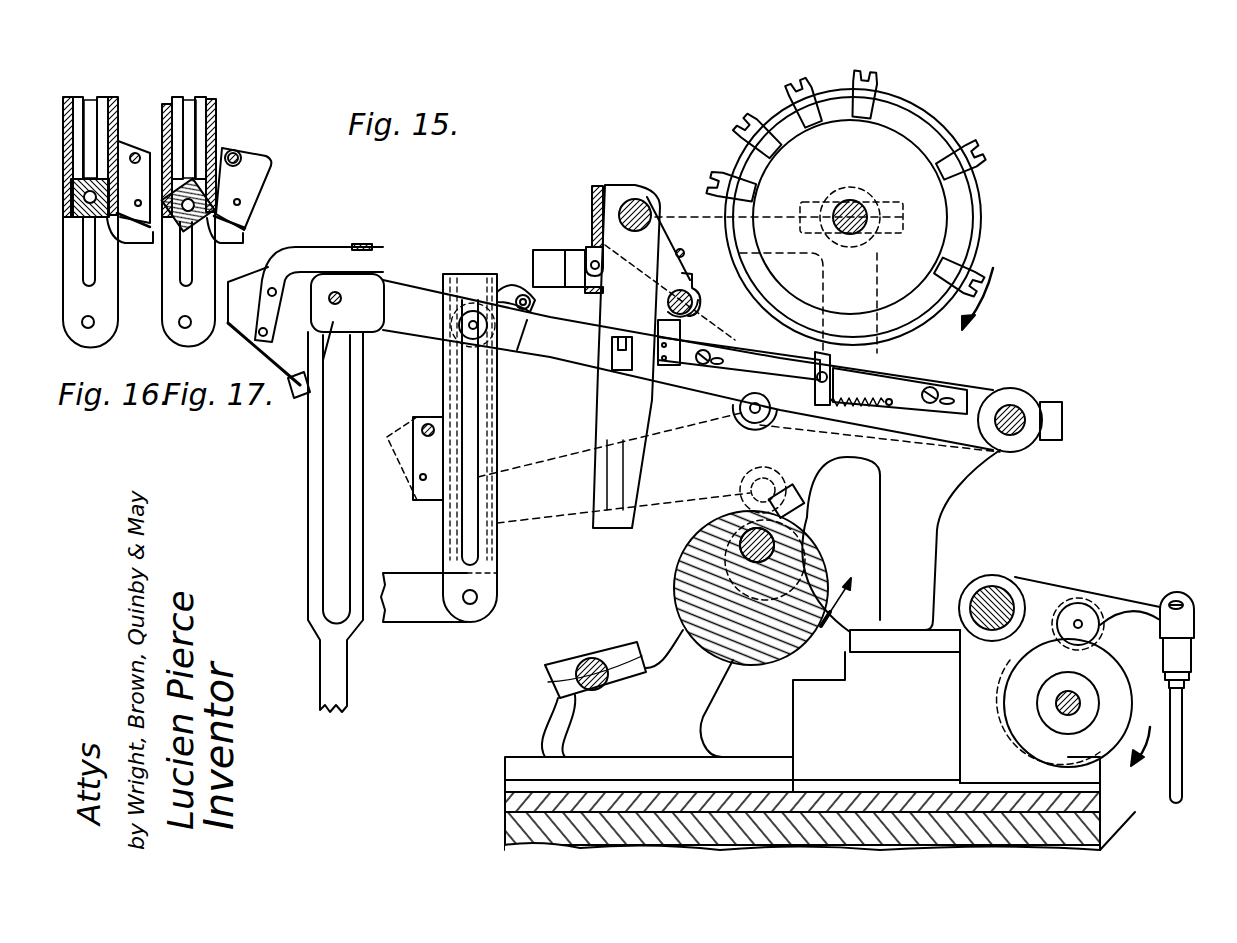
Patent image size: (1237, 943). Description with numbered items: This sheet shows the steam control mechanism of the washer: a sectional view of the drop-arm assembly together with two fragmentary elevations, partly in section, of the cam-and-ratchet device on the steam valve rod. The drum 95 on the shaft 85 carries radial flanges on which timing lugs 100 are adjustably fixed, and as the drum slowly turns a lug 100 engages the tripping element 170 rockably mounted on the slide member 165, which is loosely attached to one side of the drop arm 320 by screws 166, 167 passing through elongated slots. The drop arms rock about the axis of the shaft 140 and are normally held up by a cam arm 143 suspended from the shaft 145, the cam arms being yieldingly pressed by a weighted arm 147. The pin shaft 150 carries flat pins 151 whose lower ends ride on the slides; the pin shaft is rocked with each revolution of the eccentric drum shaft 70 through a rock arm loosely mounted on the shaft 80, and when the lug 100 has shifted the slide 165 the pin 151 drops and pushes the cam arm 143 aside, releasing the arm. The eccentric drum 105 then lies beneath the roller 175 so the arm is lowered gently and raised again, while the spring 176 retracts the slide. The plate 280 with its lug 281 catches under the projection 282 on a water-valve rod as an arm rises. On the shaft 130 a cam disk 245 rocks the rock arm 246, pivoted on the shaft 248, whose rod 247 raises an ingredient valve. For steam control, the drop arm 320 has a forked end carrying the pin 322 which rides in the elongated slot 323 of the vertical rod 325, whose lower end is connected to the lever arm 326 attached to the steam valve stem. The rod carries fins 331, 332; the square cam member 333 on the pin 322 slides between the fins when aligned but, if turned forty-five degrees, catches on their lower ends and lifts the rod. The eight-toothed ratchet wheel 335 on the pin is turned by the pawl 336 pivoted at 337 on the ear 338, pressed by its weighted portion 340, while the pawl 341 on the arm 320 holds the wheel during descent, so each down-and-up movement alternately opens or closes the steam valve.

In FIG. 15, the eccentric drum shaft 70 is at (778, 545).
In FIG. 15, the shaft 80 is at (592, 670).
In FIG. 15, the shaft 85 is at (855, 205).
In FIG. 15, the drum 95 is at (935, 207).
In FIG. 15, the timing lugs 100 is at (742, 135).
In FIG. 15, the eccentric drum 105 is at (690, 566).
In FIG. 15, the shaft 130 is at (1060, 712).
In FIG. 15, the shaft 140 is at (1015, 410).
In FIG. 15, the cam arm 143 is at (600, 240).
In FIG. 15, the shaft 145 is at (640, 198).
In FIG. 15, the weighted arm 147 is at (553, 255).
In FIG. 15, the pin shaft 150 is at (695, 300).
In FIG. 15, the flat pins 151 is at (695, 285).
In FIG. 15, the slide member 165 is at (905, 380).
In FIG. 15, the screw 166 is at (712, 355).
In FIG. 15, the screw 167 is at (950, 390).
In FIG. 15, the tripping element 170 is at (815, 362).
In FIG. 15, the roller 175 is at (738, 410).
In FIG. 15, the spring 176 is at (858, 410).
In FIG. 15, the cam disk 245 is at (1120, 665).
In FIG. 15, the rock arm 246 is at (1080, 600).
In FIG. 15, the rod 247 is at (1172, 760).
In FIG. 15, the shaft 248 is at (990, 600).
In FIG. 15, the plate 280 is at (278, 405).
In FIG. 15, the lug 281 is at (292, 400).
In FIG. 15, the projection 282 is at (307, 560).
In FIG. 15, the drop arm 320 is at (565, 357).
In FIG. 16, the pin 322 is at (92, 240).
In FIG. 17, the pin 322 is at (189, 138).
In FIG. 16, the elongated slot 323 is at (92, 282).
In FIG. 17, the elongated slot 323 is at (185, 280).
In FIG. 15, the elongated slot 323 is at (488, 432).
In FIG. 16, the vertical rod 325 is at (108, 336).
In FIG. 17, the vertical rod 325 is at (168, 332).
In FIG. 15, the vertical rod 325 is at (497, 553).
In FIG. 15, the lever arm 326 is at (425, 612).
In FIG. 16, the fin 331 is at (113, 156).
In FIG. 17, the fin 331 is at (215, 108).
In FIG. 16, the fin 332 is at (163, 120).
In FIG. 17, the fin 332 is at (167, 160).
In FIG. 16, the square cam member 333 is at (120, 243).
In FIG. 17, the square cam member 333 is at (215, 243).
In FIG. 16, the ratchet wheel 335 is at (70, 195).
In FIG. 17, the ratchet wheel 335 is at (188, 205).
In FIG. 15, the ratchet wheel 335 is at (462, 302).
In FIG. 16, the pawl 336 is at (133, 220).
In FIG. 17, the pawl 336 is at (247, 228).
In FIG. 17, the pivot 337 is at (240, 158).
In FIG. 17, the ear 338 is at (228, 150).
In FIG. 16, the weighted portion 340 is at (134, 182).
In FIG. 17, the weighted portion 340 is at (255, 165).
In FIG. 15, the weighted portion 340 is at (400, 478).
In FIG. 15, the pawl 341 is at (515, 290).